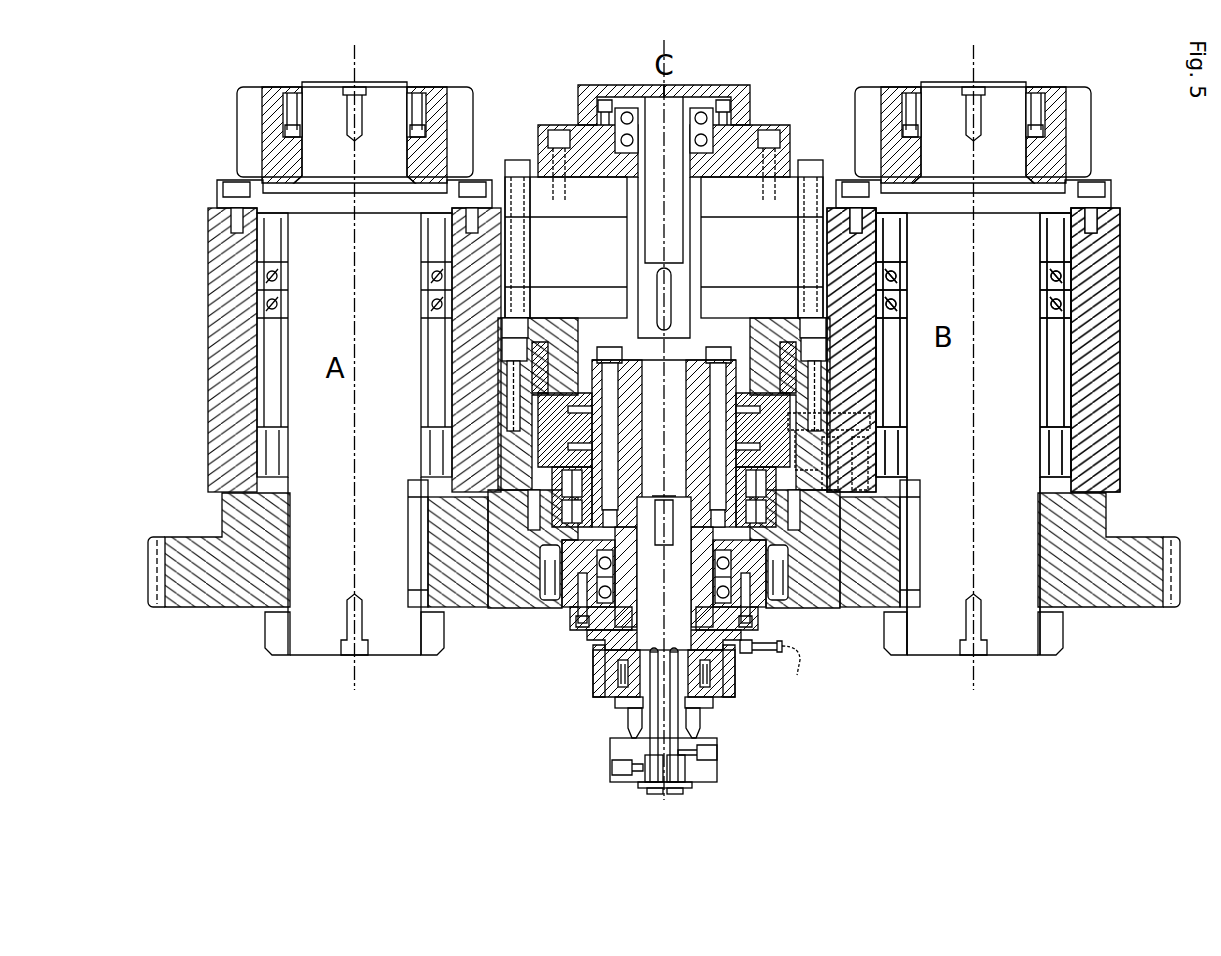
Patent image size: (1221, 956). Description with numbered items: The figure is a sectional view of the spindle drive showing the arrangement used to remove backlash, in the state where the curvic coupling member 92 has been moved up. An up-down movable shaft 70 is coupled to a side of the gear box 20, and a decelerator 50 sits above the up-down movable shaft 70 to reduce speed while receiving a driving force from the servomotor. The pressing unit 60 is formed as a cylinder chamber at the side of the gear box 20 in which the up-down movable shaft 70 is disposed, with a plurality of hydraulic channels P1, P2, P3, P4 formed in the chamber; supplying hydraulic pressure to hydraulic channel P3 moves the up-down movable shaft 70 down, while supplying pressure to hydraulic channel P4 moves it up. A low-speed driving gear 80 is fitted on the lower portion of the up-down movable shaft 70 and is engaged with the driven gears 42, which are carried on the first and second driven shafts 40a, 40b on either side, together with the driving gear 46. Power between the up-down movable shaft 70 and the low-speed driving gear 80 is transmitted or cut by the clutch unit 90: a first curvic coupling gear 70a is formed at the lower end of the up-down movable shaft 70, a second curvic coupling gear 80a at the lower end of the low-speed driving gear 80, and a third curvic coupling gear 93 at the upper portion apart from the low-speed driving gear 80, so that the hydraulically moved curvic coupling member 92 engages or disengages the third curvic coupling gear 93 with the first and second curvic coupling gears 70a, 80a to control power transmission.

The gear box 20 is at (1127, 335).
The first driven shaft 40a is at (312, 632).
The second driven shaft 40b is at (1005, 628).
The driven gear 42 is at (490, 585).
The driving gear 46 is at (270, 87).
The decelerator 50 is at (738, 203).
The pressing unit 60 is at (795, 425).
The up-down movable shaft 70 is at (798, 543).
The first curvic coupling gear 70a is at (638, 618).
The low-speed driving gear 80 is at (767, 567).
The second curvic coupling gear 80a is at (590, 628).
The clutch unit 90 is at (734, 670).
The curvic coupling member 92 is at (597, 680).
The third curvic coupling gear 93 is at (593, 655).
The hydraulic channel P1 is at (612, 763).
The hydraulic channel P2 is at (717, 751).
The hydraulic channel P3 is at (860, 443).
The hydraulic channel P4 is at (866, 470).